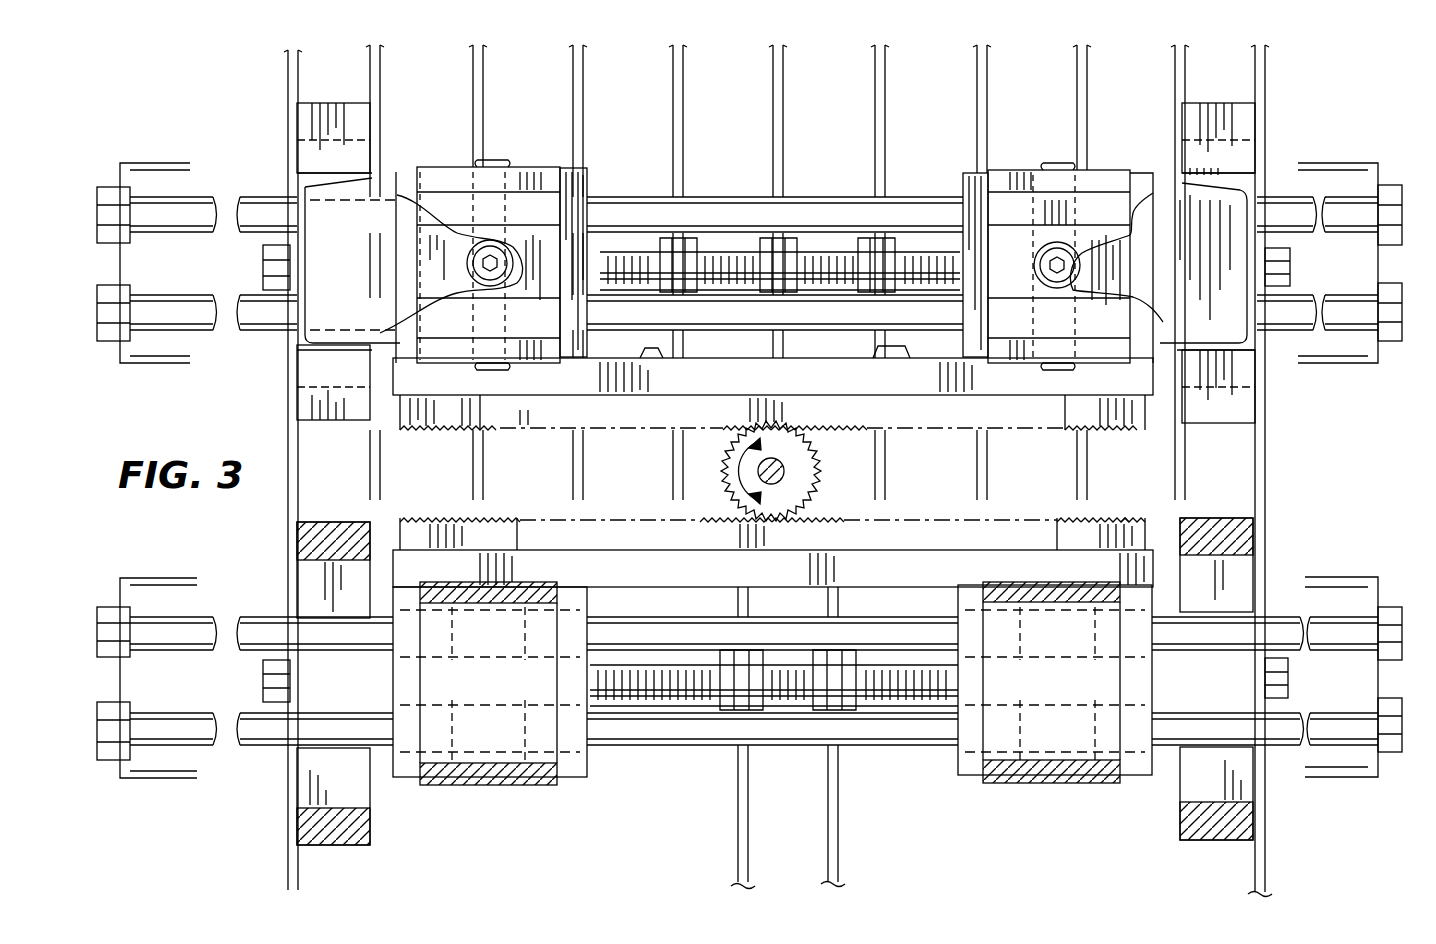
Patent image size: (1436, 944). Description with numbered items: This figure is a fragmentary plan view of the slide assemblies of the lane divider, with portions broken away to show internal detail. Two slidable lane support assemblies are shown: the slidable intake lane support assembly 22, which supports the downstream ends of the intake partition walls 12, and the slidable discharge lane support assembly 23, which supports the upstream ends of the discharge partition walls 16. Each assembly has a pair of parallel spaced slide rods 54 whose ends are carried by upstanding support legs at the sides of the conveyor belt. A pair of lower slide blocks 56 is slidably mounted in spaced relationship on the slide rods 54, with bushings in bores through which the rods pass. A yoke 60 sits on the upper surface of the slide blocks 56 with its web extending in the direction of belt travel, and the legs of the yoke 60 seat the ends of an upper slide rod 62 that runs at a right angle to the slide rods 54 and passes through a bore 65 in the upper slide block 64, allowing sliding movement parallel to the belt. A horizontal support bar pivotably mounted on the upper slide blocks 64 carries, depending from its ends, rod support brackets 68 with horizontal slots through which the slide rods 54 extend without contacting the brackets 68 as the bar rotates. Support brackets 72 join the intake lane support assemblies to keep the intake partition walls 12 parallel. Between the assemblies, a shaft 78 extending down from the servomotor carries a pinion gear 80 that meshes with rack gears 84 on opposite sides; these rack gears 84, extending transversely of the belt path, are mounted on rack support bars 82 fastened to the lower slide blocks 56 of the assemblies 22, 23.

The intake partition walls 12 is at (836, 826).
The discharge partition walls 16 is at (683, 128).
The slidable intake lane support assembly 22 is at (1345, 568).
The slidable discharge lane support assembly 23 is at (1383, 362).
The slide rods 54 is at (1282, 210).
The lower slide blocks 56 is at (966, 186).
The yoke 60 is at (1003, 175).
The upper slide rod 62 is at (1048, 212).
The upper slide block 64 is at (1100, 235).
The bore 65 is at (1037, 285).
The rod support brackets 68 is at (1232, 378).
The support brackets 72 is at (1258, 866).
The shaft 78 is at (784, 470).
The pinion gear 80 is at (812, 492).
The rack support bars 82 is at (925, 378).
The rack gears 84 is at (850, 410).